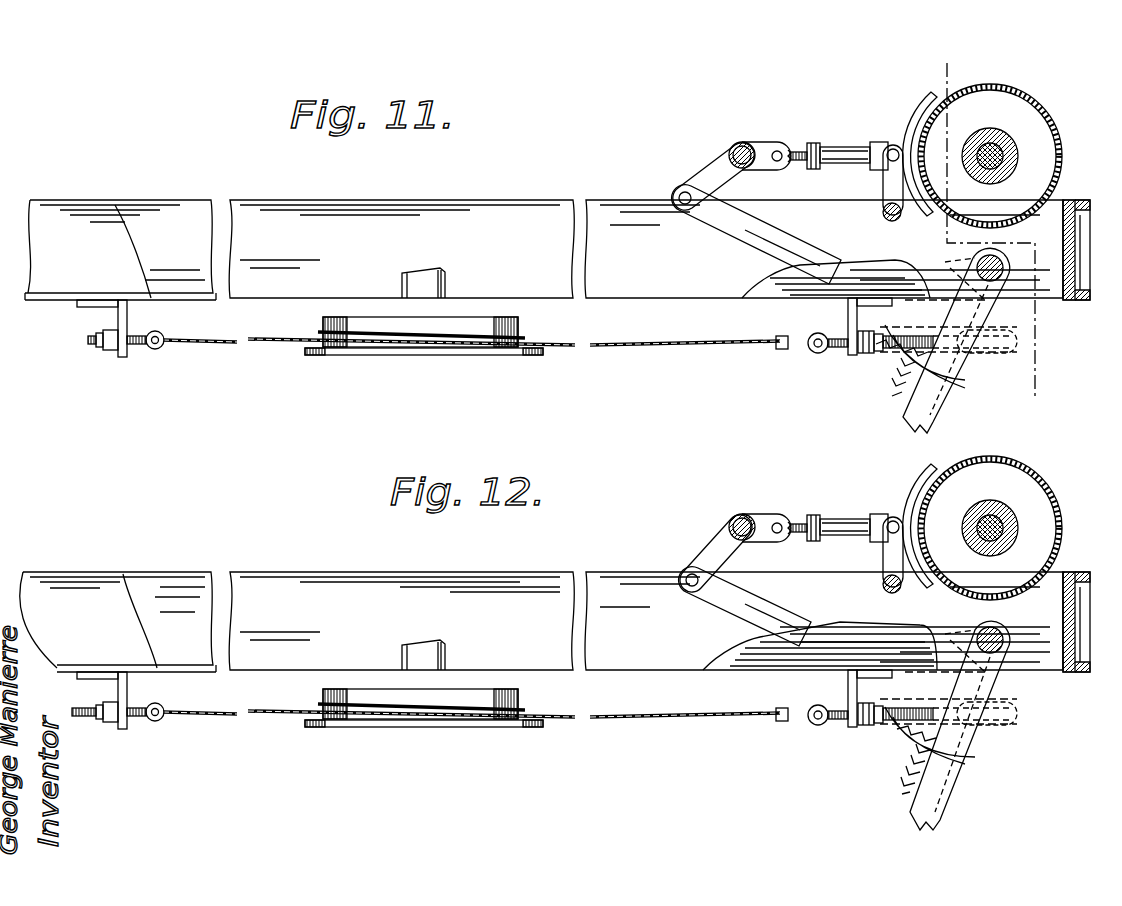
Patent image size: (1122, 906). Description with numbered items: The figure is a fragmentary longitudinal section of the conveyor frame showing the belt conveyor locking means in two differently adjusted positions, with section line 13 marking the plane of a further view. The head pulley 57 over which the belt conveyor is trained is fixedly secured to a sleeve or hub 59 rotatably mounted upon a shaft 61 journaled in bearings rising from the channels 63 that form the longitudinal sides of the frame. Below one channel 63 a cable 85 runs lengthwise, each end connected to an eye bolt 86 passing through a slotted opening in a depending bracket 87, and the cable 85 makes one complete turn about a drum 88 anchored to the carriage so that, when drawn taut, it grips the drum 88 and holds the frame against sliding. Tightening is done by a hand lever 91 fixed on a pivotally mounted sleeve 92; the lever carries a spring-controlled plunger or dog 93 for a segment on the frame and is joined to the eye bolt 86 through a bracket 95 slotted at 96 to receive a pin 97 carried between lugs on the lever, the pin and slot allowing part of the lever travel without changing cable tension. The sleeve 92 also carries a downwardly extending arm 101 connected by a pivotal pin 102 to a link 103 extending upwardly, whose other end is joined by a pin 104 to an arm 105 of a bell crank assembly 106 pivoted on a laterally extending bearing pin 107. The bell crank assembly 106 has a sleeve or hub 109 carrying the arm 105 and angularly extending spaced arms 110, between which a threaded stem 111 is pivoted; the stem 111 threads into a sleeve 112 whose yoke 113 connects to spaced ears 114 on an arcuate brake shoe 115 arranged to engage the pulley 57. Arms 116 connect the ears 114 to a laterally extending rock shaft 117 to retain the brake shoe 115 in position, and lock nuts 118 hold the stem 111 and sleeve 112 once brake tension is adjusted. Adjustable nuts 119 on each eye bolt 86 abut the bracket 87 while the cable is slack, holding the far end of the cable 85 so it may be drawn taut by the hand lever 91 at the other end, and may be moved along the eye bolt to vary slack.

In FIG. 11, the section line 13- 13 is at (962, 57).
In FIG. 11, the head pulley 57 is at (1003, 92).
In FIG. 12, the head pulley 57 is at (1000, 527).
In FIG. 11, the sleeve or hub 59 is at (1000, 145).
In FIG. 12, the sleeve or hub 59 is at (1032, 520).
In FIG. 11, the shaft 61 is at (1005, 155).
In FIG. 12, the shaft 61 is at (1038, 535).
In FIG. 11, the channel 63 is at (98, 242).
In FIG. 12, the channel 63 is at (555, 624).
In FIG. 11, the cable 85 is at (243, 345).
In FIG. 12, the cable 85 is at (471, 735).
In FIG. 11, the eye bolt 86 is at (156, 350).
In FIG. 12, the eye bolt 86 is at (487, 738).
In FIG. 11, the bracket 87 is at (122, 358).
In FIG. 12, the bracket 87 is at (484, 736).
In FIG. 11, the drum 88 is at (472, 356).
In FIG. 12, the drum 88 is at (424, 728).
In FIG. 11, the hand lever 91 is at (938, 410).
In FIG. 12, the hand lever 91 is at (960, 734).
In FIG. 11, the sleeve 92 is at (1003, 268).
In FIG. 12, the sleeve 92 is at (1012, 641).
In FIG. 11, the spring-controlled plunger or dog 93 is at (903, 397).
In FIG. 12, the spring-controlled plunger or dog 93 is at (903, 781).
In FIG. 11, the bracket 95 is at (968, 378).
In FIG. 12, the bracket 95 is at (969, 737).
In FIG. 11, the slot 96 is at (1018, 343).
In FIG. 12, the slot 96 is at (1012, 708).
In FIG. 11, the pin 97 is at (1000, 315).
In FIG. 12, the pin 97 is at (948, 731).
In FIG. 11, the downwardly extending arm 101 is at (948, 282).
In FIG. 12, the downwardly extending arm 101 is at (1003, 665).
In FIG. 11, the pivotal pin 102 is at (905, 365).
In FIG. 12, the pivotal pin 102 is at (933, 744).
In FIG. 11, the link 103 is at (815, 245).
In FIG. 12, the link 103 is at (758, 606).
In FIG. 11, the pin 104 is at (683, 204).
In FIG. 12, the pin 104 is at (664, 599).
In FIG. 11, the arm 105 is at (692, 177).
In FIG. 12, the arm 105 is at (708, 552).
In FIG. 11, the bell crank assembly 106 is at (739, 140).
In FIG. 12, the bell crank assembly 106 is at (720, 507).
In FIG. 11, the bearing pin 107 is at (752, 144).
In FIG. 12, the bearing pin 107 is at (763, 503).
In FIG. 11, the sleeve or hub 109 is at (732, 152).
In FIG. 12, the sleeve or hub 109 is at (690, 512).
In FIG. 11, the spaced arms 110 is at (778, 150).
In FIG. 12, the spaced arms 110 is at (766, 548).
In FIG. 11, the threaded stem 111 is at (804, 150).
In FIG. 12, the threaded stem 111 is at (794, 499).
In FIG. 11, the sleeve 112 is at (848, 148).
In FIG. 12, the sleeve 112 is at (832, 508).
In FIG. 11, the yoke 113 is at (872, 165).
In FIG. 12, the yoke 113 is at (861, 506).
In FIG. 11, the spaced ears 114 is at (895, 146).
In FIG. 12, the spaced ears 114 is at (912, 518).
In FIG. 11, the arcuate brake shoe 115 is at (938, 97).
In FIG. 12, the arcuate brake shoe 115 is at (950, 514).
In FIG. 11, the arms 116 is at (897, 195).
In FIG. 12, the arms 116 is at (863, 570).
In FIG. 11, the rock shaft 117 is at (895, 262).
In FIG. 12, the rock shaft 117 is at (851, 614).
In FIG. 11, the lock nuts 118 is at (808, 160).
In FIG. 12, the lock nuts 118 is at (806, 547).
In FIG. 11, the adjustable nuts 119 is at (106, 348).
In FIG. 12, the adjustable nuts 119 is at (466, 701).